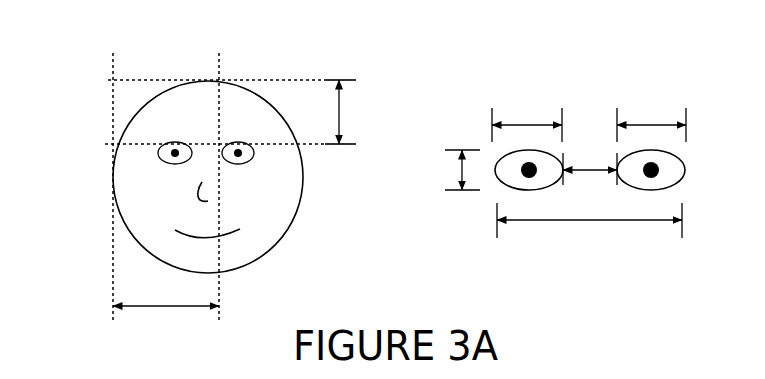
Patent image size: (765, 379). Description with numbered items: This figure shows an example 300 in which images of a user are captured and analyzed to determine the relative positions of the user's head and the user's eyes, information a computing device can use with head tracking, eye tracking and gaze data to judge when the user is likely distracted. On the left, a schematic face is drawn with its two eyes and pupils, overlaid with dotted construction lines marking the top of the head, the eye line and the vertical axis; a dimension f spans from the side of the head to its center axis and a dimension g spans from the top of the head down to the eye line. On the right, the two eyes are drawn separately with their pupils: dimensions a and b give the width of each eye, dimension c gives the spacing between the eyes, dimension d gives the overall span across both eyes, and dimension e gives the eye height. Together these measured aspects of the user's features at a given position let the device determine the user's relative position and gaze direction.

The example 300 is at (51, 84).
The left eye width dimension a is at (527, 121).
The right eye width dimension b is at (651, 121).
The inter-eye spacing dimension c is at (590, 164).
The overall eye span dimension d is at (589, 217).
The eye height dimension e is at (460, 170).
The face half-width dimension f is at (166, 293).
The top-of-head to eye-line dimension g is at (341, 112).